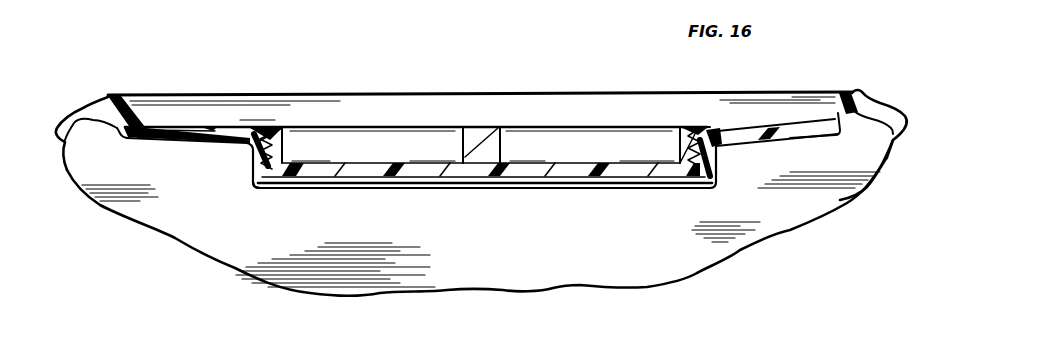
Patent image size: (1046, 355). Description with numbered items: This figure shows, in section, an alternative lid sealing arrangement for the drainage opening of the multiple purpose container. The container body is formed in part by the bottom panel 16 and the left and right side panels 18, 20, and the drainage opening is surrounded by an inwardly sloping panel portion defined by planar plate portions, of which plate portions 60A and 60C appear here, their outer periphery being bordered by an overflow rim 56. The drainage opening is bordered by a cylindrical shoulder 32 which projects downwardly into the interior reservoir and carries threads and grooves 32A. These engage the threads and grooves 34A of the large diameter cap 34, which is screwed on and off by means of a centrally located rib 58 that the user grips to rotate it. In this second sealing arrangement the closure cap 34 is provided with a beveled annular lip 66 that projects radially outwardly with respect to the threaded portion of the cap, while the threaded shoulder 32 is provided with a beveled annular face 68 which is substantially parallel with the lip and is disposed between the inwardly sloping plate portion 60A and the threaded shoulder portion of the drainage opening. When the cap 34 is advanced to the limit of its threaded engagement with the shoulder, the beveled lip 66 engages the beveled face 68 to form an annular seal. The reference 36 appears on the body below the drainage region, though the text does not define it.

The bottom panel 16 is at (760, 245).
The left side panel 18 is at (877, 103).
The right side panel 20 is at (83, 107).
The cylindrical shoulder 32 is at (716, 185).
The threads and grooves 32A is at (278, 177).
The large diameter cap 34 is at (420, 117).
The threads and grooves 34A is at (268, 162).
The base body 36 is at (572, 249).
The overflow rim 56 is at (378, 93).
The rib 58 is at (498, 130).
The planar plate portion 60A is at (762, 137).
The planar plate portion 60C is at (210, 130).
The beveled annular lip 66 is at (693, 127).
The annular face 68 is at (717, 145).